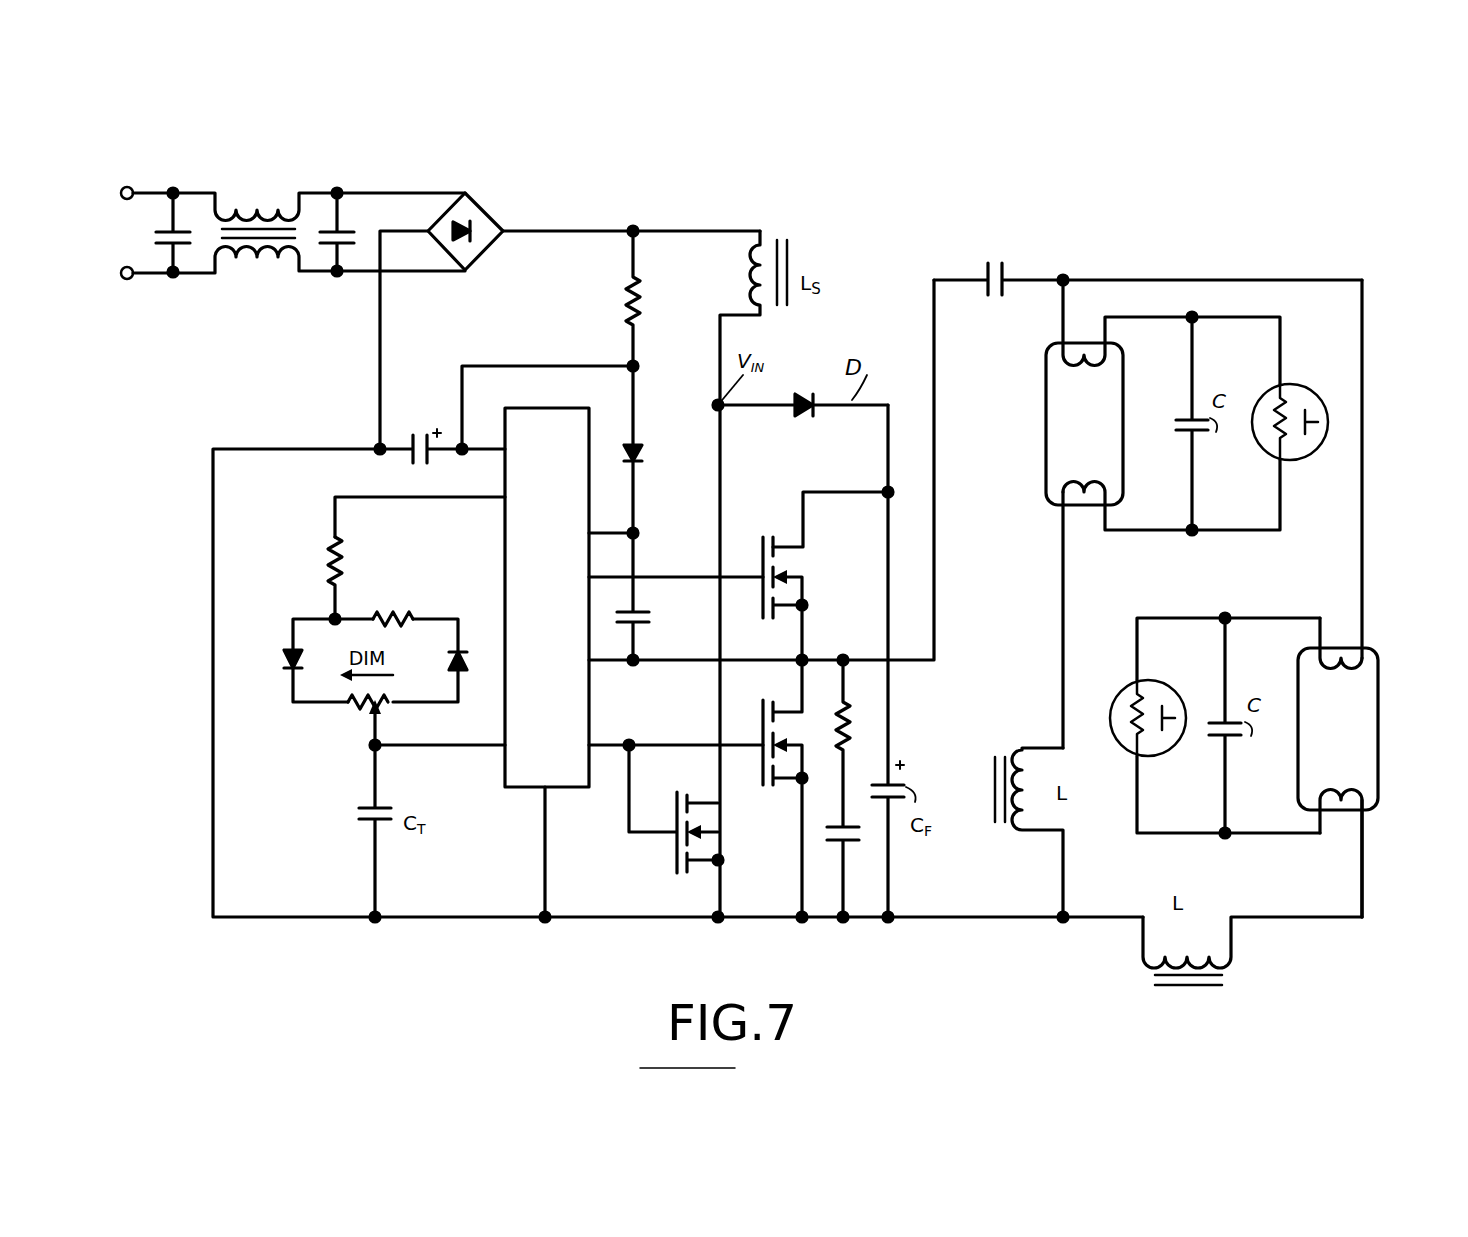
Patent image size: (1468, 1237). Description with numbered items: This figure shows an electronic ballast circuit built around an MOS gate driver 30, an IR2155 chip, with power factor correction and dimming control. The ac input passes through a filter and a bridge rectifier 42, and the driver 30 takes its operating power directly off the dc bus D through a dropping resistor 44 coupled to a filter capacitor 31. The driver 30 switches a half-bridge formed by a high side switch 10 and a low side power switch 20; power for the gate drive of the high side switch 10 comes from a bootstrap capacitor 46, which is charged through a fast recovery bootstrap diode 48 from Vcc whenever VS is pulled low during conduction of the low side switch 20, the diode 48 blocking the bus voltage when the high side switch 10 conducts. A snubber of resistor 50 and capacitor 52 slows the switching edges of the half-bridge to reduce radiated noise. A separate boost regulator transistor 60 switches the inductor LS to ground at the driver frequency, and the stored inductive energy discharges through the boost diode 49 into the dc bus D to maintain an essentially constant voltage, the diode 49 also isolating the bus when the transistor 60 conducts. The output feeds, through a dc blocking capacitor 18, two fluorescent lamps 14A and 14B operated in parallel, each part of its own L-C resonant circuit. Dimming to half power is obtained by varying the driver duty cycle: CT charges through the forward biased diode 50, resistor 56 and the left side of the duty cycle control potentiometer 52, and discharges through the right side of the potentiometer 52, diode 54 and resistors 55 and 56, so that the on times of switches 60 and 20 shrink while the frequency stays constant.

The bridge rectifier 42 is at (480, 203).
The dropping resistor 44 is at (617, 295).
The filter capacitor 31 is at (418, 420).
The MOS gate driver 30 is at (513, 789).
The resistor 56 is at (325, 540).
The resistor 55 is at (415, 597).
The diode 54 is at (462, 640).
The diode 50 is at (272, 658).
The duty cycle control potentiometer 52 is at (353, 712).
The bootstrap diode 48 is at (650, 448).
The boost diode 49 is at (803, 427).
The bootstrap capacitor 46 is at (648, 617).
The high side switch 10 is at (813, 585).
The low side power switch 20 is at (757, 768).
The boost regulator transistor 60 is at (672, 852).
The DC blocking capacitor 18 is at (1018, 236).
The fluorescent lamp 14A is at (1043, 418).
The fluorescent lamp 14B is at (1382, 747).